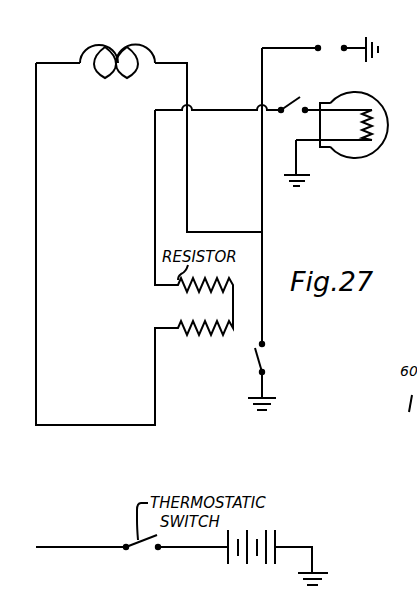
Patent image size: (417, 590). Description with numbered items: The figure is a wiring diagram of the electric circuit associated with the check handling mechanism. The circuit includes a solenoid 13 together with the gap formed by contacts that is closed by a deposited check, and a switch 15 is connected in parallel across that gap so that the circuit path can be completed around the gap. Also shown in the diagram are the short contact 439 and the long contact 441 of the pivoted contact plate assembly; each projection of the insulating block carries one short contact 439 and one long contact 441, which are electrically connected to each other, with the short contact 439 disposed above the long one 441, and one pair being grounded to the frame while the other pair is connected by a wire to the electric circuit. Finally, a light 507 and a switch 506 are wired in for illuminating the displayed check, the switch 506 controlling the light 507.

The solenoid 13 is at (140, 46).
The short contact 439 is at (319, 45).
The long contact 441 is at (345, 46).
The switch 506 is at (295, 98).
The light 507 is at (360, 94).
The switch 15 is at (264, 362).